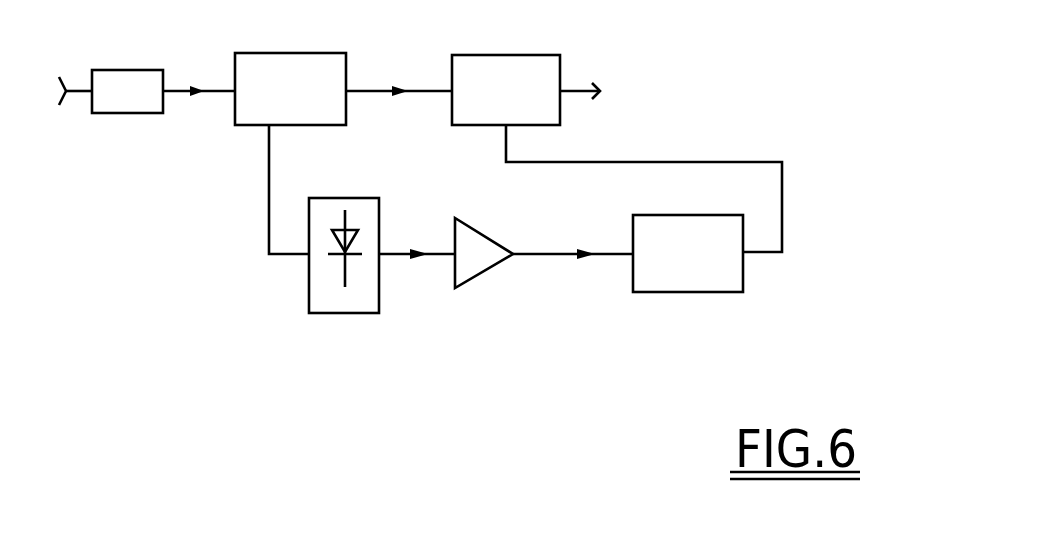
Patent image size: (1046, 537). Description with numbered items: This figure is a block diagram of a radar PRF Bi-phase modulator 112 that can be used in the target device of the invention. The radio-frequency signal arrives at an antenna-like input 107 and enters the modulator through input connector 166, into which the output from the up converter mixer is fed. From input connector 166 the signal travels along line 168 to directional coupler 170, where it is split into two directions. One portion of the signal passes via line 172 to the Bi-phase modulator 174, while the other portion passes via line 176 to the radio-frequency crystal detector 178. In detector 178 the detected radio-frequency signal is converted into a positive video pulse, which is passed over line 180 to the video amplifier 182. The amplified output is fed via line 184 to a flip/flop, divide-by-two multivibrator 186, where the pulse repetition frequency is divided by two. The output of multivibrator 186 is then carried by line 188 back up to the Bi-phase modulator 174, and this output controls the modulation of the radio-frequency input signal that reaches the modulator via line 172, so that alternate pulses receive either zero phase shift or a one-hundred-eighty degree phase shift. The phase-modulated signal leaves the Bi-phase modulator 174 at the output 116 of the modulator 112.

The antenna 107 is at (72, 95).
The radar Bi-phase modulator 112 is at (137, 378).
The output 116 is at (575, 87).
The input connector 166 is at (105, 104).
The line 168 is at (203, 89).
The directional coupler 170 is at (268, 104).
The line 172 is at (405, 88).
The Bi-phase modulator 174 is at (483, 105).
The line 176 is at (267, 190).
The radio-frequency crystal detector 178 is at (347, 197).
The line 180 is at (419, 258).
The video amplifier 182 is at (485, 236).
The line 184 is at (562, 258).
The flip/flop divide-by-two multivibrator 186 is at (664, 265).
The line 188 is at (652, 161).